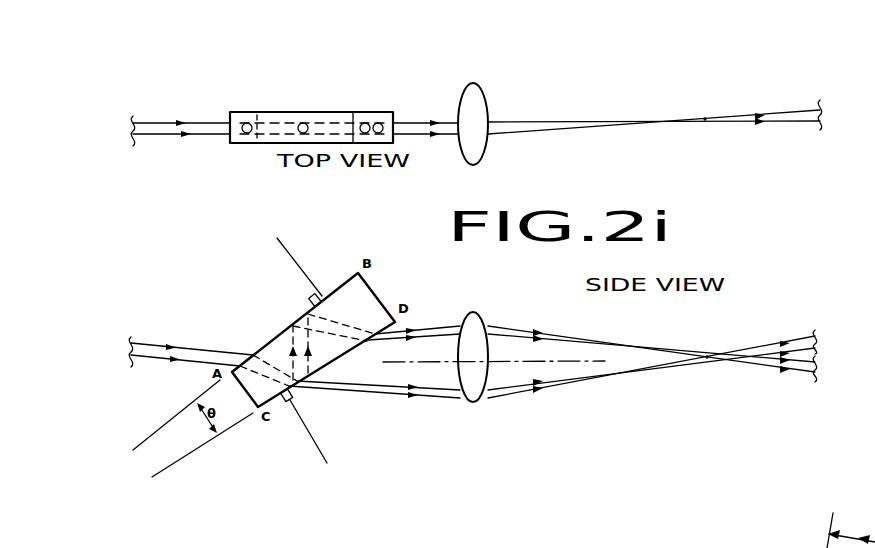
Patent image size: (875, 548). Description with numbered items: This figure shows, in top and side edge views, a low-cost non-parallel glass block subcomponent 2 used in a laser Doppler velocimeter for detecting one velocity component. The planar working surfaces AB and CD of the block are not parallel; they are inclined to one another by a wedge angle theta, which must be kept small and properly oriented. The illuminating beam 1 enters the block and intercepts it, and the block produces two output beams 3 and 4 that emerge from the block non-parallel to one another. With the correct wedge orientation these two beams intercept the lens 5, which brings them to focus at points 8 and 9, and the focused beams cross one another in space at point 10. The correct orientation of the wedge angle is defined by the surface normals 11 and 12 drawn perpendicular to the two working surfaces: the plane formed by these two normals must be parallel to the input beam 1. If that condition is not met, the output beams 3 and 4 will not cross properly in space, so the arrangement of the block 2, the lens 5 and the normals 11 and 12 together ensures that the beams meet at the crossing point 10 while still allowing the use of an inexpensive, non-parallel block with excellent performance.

The illuminating beam 1 is at (190, 347).
The birefringent crystal 2 is at (335, 289).
The output beam 3 is at (403, 120).
The output beam 4 is at (433, 396).
The lens 5 is at (482, 103).
The focus point 8 is at (613, 344).
The focus point 9 is at (621, 373).
The crossing point 10 is at (706, 120).
The surface normal 11 is at (320, 450).
The surface normal 12 is at (289, 252).